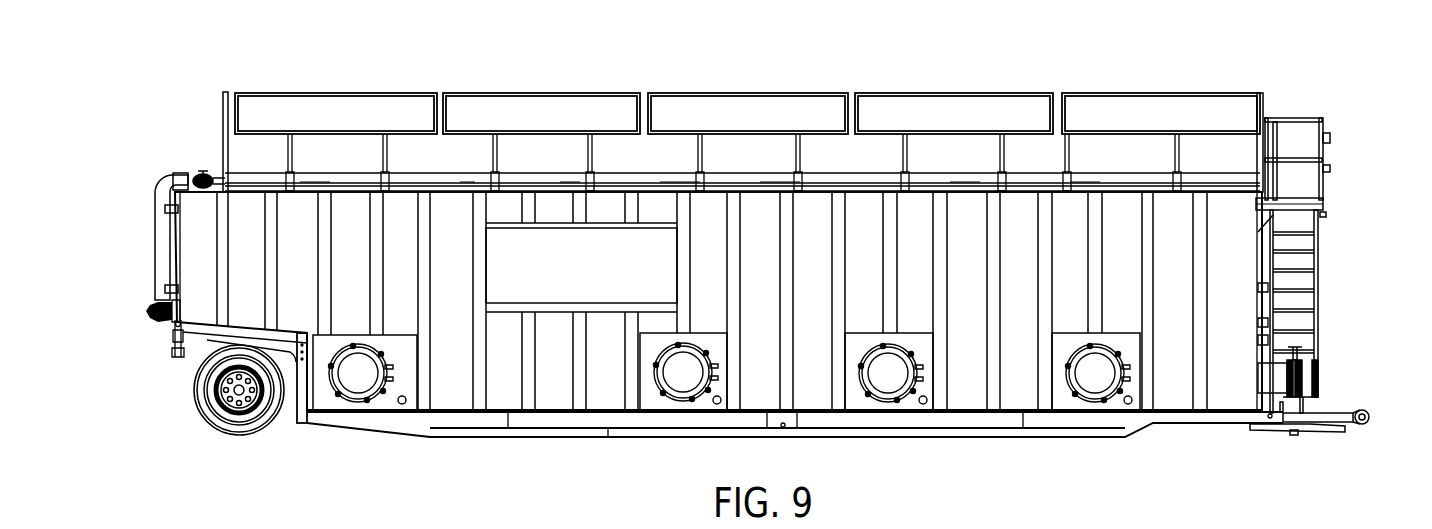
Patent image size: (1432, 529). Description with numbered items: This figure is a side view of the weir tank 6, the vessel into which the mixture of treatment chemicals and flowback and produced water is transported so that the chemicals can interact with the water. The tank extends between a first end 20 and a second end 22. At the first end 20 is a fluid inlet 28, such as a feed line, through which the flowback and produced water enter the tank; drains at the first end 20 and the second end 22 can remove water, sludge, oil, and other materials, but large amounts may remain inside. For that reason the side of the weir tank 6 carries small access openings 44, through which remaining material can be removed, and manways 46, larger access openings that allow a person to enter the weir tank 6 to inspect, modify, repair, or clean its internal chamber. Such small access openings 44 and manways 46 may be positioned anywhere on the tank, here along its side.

The weir tank 6 is at (192, 86).
The first end 20 is at (180, 331).
The second end 22 is at (1323, 253).
The fluid inlet 28 is at (156, 196).
The small access openings 44 is at (403, 405).
The manways 46 is at (358, 380).